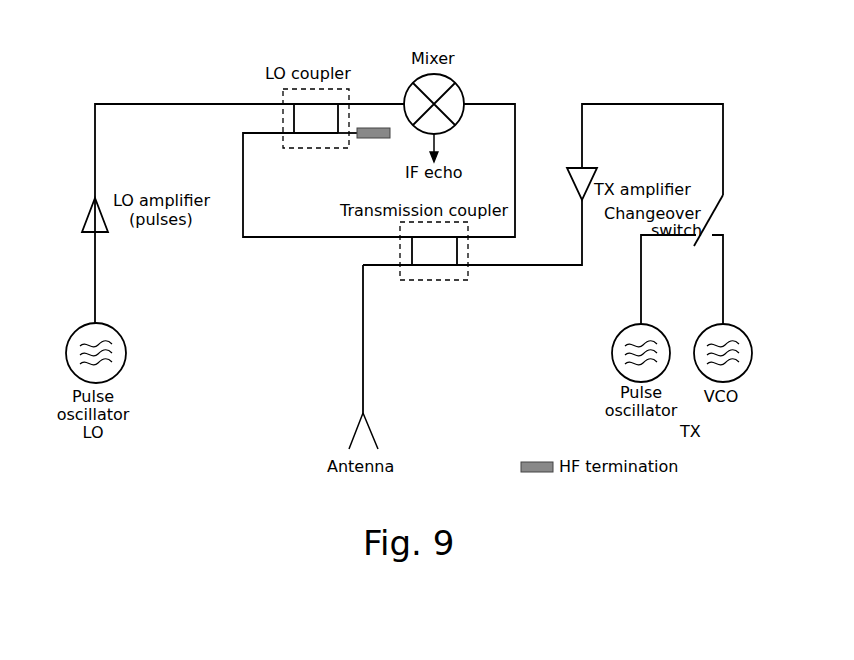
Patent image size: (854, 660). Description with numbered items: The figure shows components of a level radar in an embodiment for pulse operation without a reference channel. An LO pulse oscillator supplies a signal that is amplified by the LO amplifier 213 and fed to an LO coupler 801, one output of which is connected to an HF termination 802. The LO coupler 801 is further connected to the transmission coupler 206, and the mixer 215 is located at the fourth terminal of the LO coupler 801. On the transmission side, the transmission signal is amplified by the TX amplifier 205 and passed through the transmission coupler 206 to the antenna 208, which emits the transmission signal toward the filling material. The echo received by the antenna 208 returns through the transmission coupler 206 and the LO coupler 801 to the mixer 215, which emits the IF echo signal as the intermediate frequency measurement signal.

The LO amplifier (pulse) 213 is at (86, 234).
The LO coupler 801 is at (282, 102).
The HF termination 802 is at (386, 140).
The mixer 215 is at (487, 80).
The TX amplifier 205 is at (590, 167).
The transmission coupler 206 is at (447, 262).
The antenna 208 is at (359, 434).